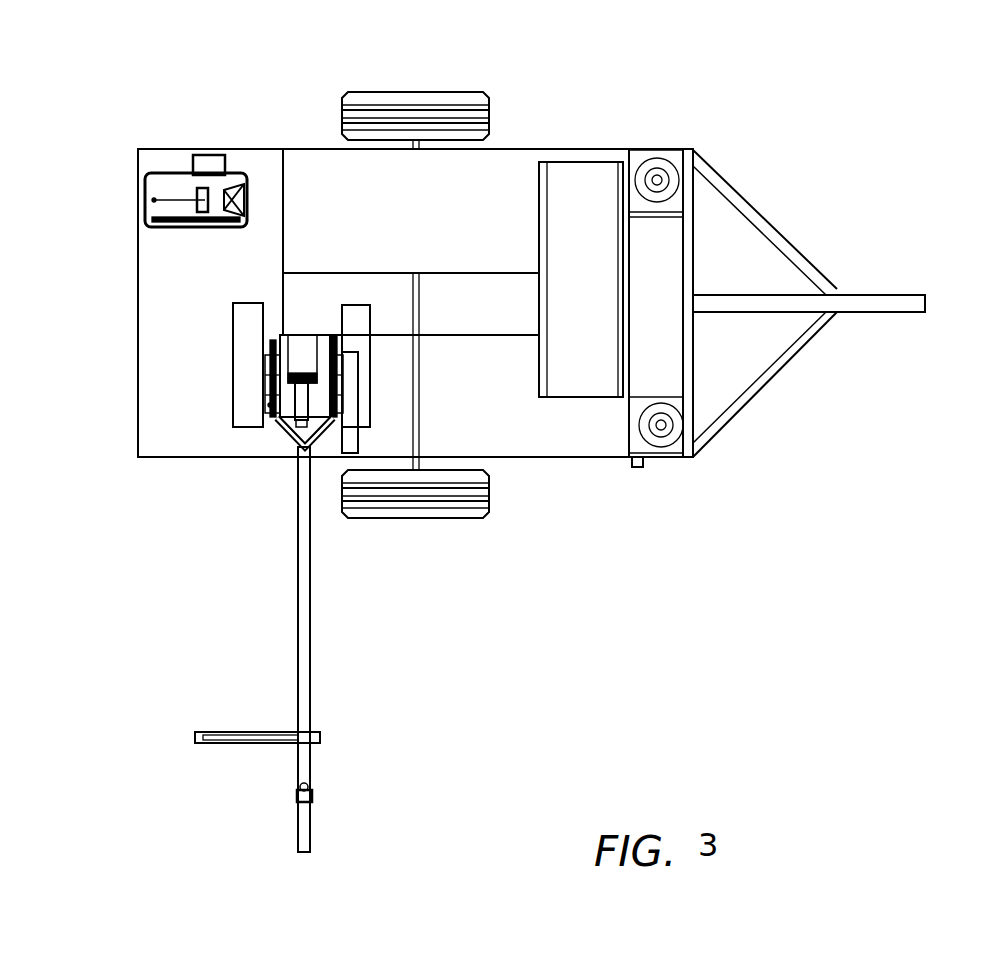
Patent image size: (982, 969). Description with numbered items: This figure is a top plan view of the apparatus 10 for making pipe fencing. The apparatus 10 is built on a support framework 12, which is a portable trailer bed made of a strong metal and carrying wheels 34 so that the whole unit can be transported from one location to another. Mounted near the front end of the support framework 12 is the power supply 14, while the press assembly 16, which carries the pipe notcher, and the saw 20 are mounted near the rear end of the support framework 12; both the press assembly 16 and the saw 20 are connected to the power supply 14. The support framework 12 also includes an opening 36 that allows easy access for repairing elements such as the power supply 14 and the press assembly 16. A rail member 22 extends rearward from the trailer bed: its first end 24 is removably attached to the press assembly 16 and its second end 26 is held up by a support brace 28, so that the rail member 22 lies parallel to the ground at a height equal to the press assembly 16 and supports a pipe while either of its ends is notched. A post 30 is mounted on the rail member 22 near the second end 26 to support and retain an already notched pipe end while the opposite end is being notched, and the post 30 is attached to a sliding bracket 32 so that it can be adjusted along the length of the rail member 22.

The apparatus 10 is at (800, 142).
The support framework 12 is at (562, 437).
The power supply 14 is at (585, 195).
The press assembly 16 is at (292, 360).
The saw 20 is at (209, 175).
The rail member 22 is at (310, 637).
The first end 24 is at (297, 453).
The second end 26 is at (312, 845).
The support brace 28 is at (228, 745).
The post 30 is at (307, 785).
The sliding bracket 32 is at (313, 797).
The wheel 34 is at (415, 107).
The opening 36 is at (310, 303).